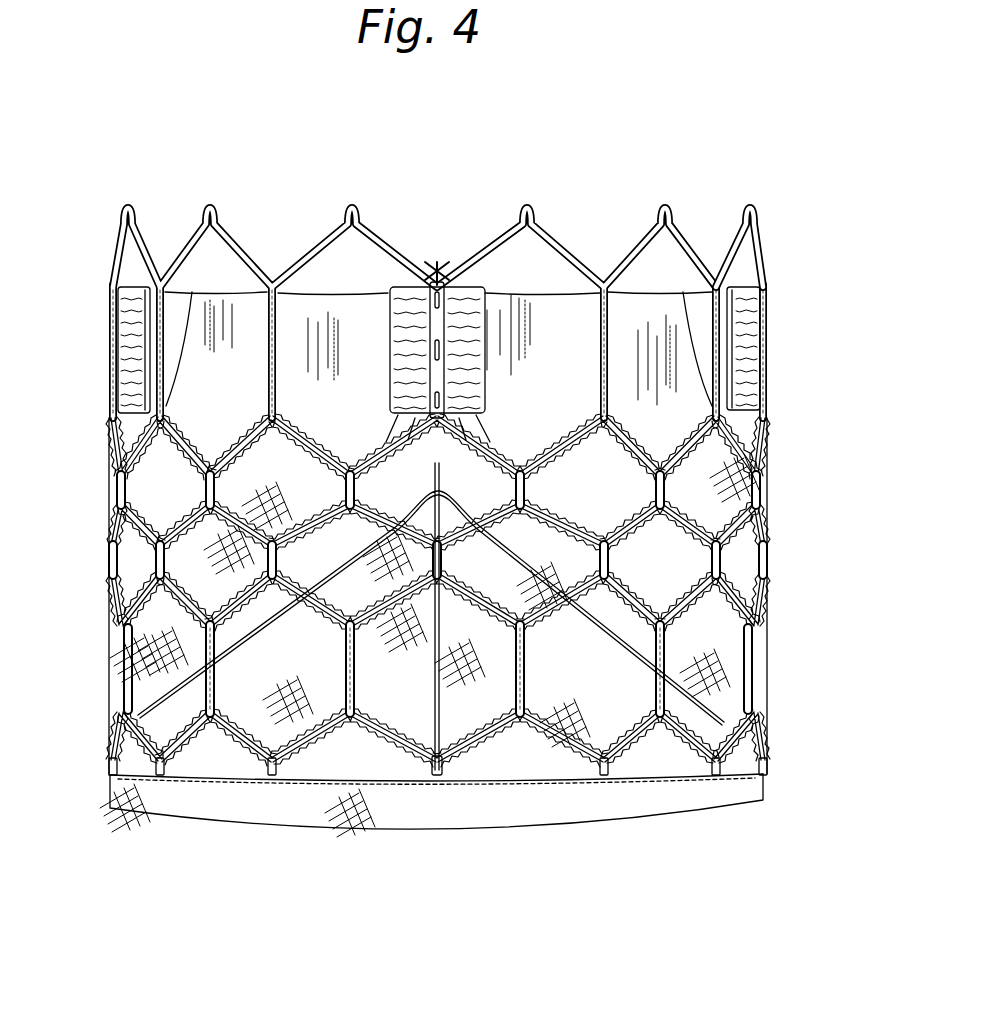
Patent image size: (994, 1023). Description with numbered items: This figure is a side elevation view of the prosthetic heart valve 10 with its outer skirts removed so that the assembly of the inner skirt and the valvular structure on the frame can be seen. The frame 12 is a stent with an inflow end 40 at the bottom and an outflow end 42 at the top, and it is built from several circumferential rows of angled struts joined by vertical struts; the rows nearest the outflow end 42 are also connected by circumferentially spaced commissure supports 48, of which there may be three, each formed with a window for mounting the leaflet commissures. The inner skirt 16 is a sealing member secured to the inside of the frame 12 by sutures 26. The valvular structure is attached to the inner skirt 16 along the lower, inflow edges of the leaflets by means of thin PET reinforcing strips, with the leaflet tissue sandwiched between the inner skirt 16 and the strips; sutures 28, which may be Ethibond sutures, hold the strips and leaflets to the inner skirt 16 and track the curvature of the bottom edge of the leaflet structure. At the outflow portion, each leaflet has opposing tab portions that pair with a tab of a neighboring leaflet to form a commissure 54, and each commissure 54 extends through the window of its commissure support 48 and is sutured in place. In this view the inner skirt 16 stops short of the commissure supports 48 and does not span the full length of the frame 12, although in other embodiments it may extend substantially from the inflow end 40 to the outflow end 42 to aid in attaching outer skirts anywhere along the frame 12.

The prosthetic heart valve 10 is at (671, 169).
The frame 12 is at (762, 246).
The inner skirt 16 is at (716, 678).
The sutures 26 is at (648, 445).
The sutures 28 is at (110, 592).
The inflow end 40 is at (766, 779).
The outflow end 42 is at (750, 207).
The commissure supports 48 is at (474, 290).
The commissure 54 is at (406, 290).